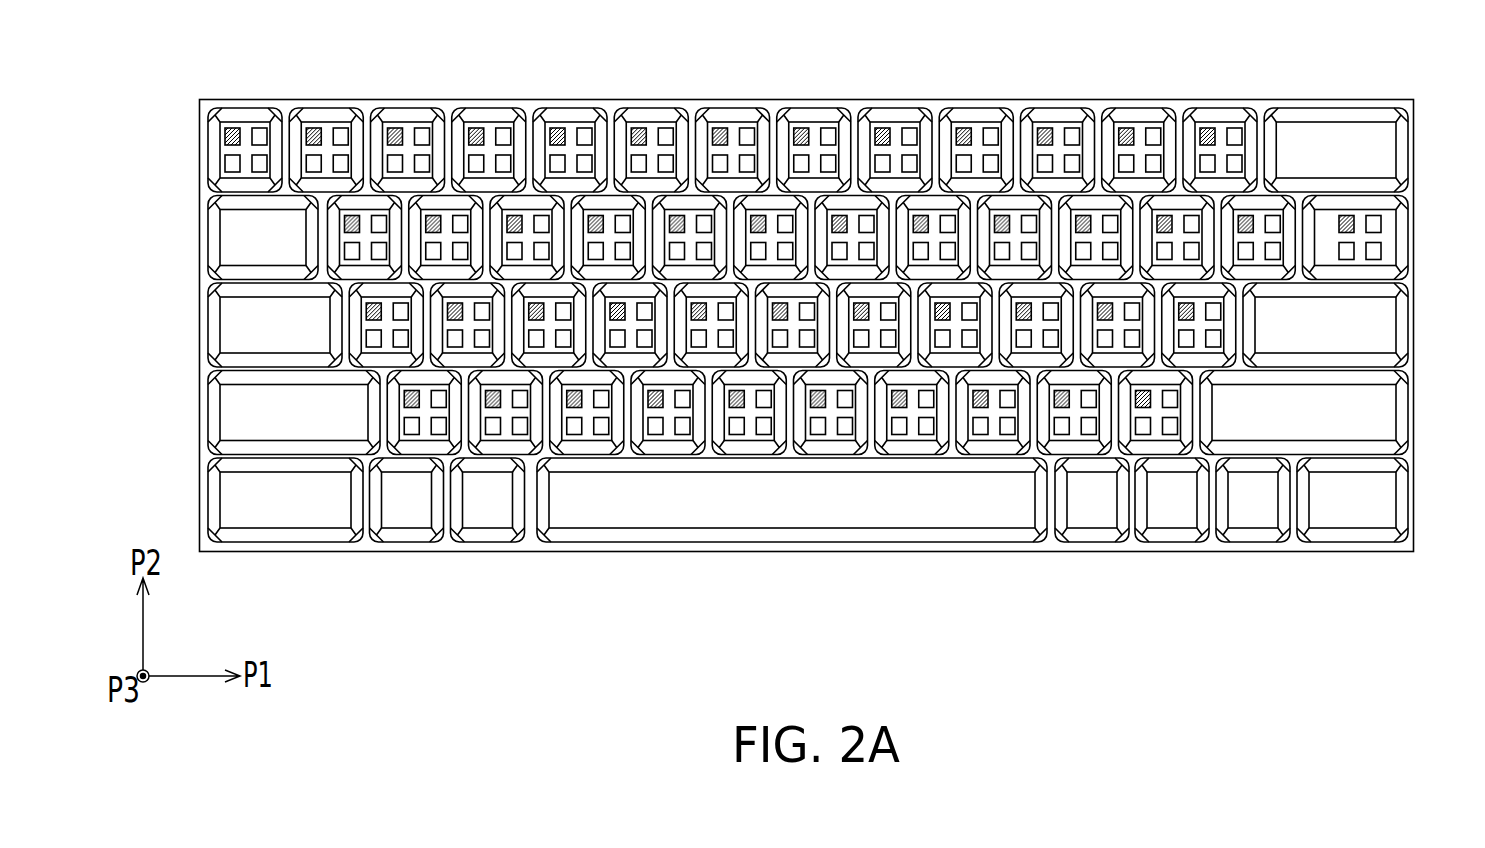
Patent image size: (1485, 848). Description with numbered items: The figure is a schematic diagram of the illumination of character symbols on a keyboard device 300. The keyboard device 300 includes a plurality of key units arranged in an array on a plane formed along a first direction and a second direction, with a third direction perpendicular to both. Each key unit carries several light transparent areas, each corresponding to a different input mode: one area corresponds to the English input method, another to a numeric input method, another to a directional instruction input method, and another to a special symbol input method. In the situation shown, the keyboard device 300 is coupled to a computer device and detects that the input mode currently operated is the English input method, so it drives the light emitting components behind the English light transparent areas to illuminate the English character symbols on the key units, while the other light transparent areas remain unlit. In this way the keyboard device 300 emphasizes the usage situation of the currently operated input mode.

The keyboard device 300 is at (786, 351).